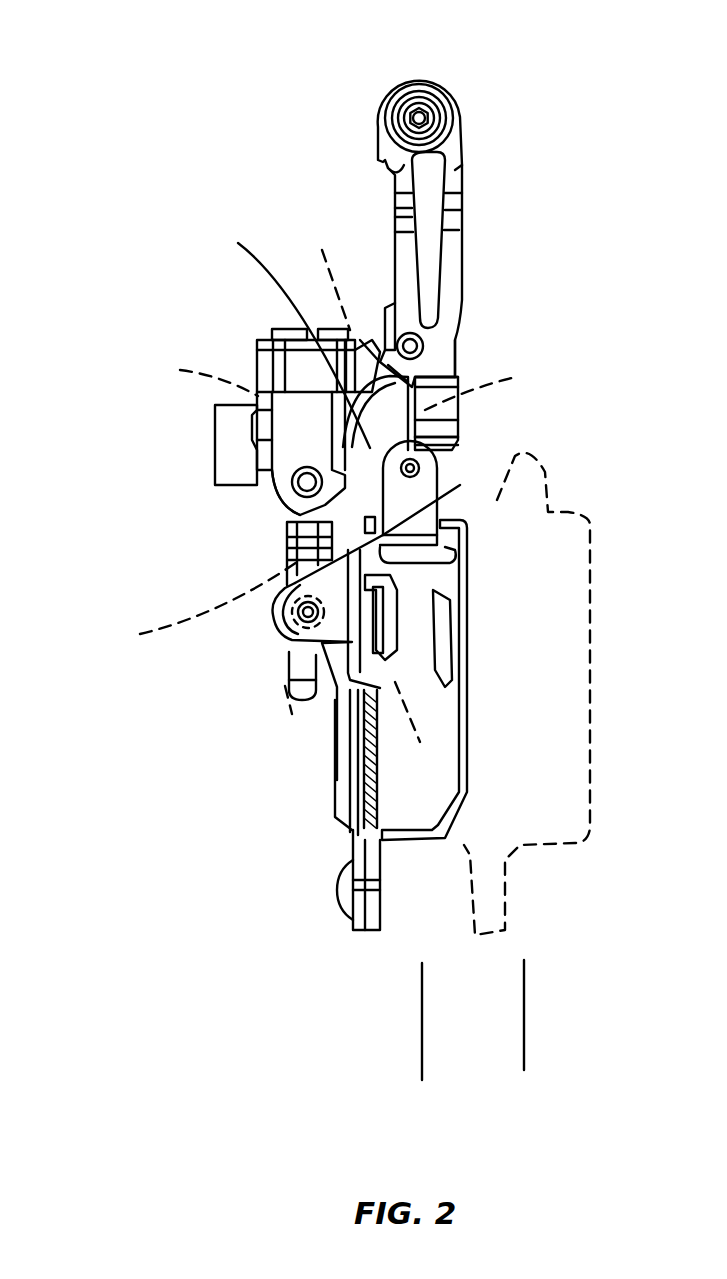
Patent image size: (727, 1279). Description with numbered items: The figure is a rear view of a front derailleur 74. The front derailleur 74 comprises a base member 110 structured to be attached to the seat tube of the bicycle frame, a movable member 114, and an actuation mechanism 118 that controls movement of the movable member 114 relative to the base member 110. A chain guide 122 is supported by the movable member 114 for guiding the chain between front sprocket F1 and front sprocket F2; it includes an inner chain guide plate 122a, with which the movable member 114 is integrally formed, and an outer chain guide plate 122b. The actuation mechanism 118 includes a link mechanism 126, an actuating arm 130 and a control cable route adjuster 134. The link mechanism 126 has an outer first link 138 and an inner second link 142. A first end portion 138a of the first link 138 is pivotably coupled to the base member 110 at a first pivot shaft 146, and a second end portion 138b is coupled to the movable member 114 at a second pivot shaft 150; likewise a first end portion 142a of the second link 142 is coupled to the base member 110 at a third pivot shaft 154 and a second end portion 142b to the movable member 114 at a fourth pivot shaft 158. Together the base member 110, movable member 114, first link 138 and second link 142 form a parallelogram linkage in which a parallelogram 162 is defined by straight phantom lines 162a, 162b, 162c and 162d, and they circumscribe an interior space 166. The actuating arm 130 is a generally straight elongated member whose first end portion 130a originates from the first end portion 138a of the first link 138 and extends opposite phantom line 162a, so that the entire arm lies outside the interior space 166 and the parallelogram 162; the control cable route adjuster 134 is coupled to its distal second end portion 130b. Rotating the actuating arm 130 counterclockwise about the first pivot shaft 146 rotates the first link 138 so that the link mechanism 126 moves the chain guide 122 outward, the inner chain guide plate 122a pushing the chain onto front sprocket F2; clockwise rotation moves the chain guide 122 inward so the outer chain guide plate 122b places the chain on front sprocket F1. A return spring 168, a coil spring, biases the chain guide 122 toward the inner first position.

The front derailleur 74 is at (212, 44).
The base member 110 is at (256, 345).
The movable member 114 is at (435, 502).
The actuation mechanism 118 is at (505, 206).
The chain guide 122 is at (396, 694).
The inner chain guide plate 122a is at (336, 764).
The outer chain guide plate 122b is at (468, 722).
The link mechanism 126 is at (200, 578).
The actuating arm 130 is at (372, 177).
The first end portion of actuating arm 130a is at (452, 332).
The distal second end portion of actuating arm 130b is at (460, 156).
The control cable route adjuster 134 is at (446, 64).
The outer first link 138 is at (440, 420).
The first end portion of first link 138a is at (456, 358).
The second end portion of first link 138b is at (440, 440).
The inner second link 142 is at (300, 548).
The first end portion of second link 142a is at (280, 506).
The second end portion of second link 142b is at (284, 616).
The first pivot shaft 146 is at (420, 338).
The second pivot shaft 150 is at (422, 470).
The third pivot shaft 154 is at (296, 472).
The fourth pivot shaft 158 is at (300, 622).
The parallelogram 162 is at (320, 499).
The phantom line 162a is at (496, 384).
The phantom line 162b is at (421, 727).
The phantom line 162c is at (187, 604).
The phantom line 162d is at (316, 278).
The interior space 166 is at (277, 336).
The return spring 168 is at (282, 702).
The front sprocket F1 is at (422, 1010).
The front sprocket F2 is at (524, 1008).